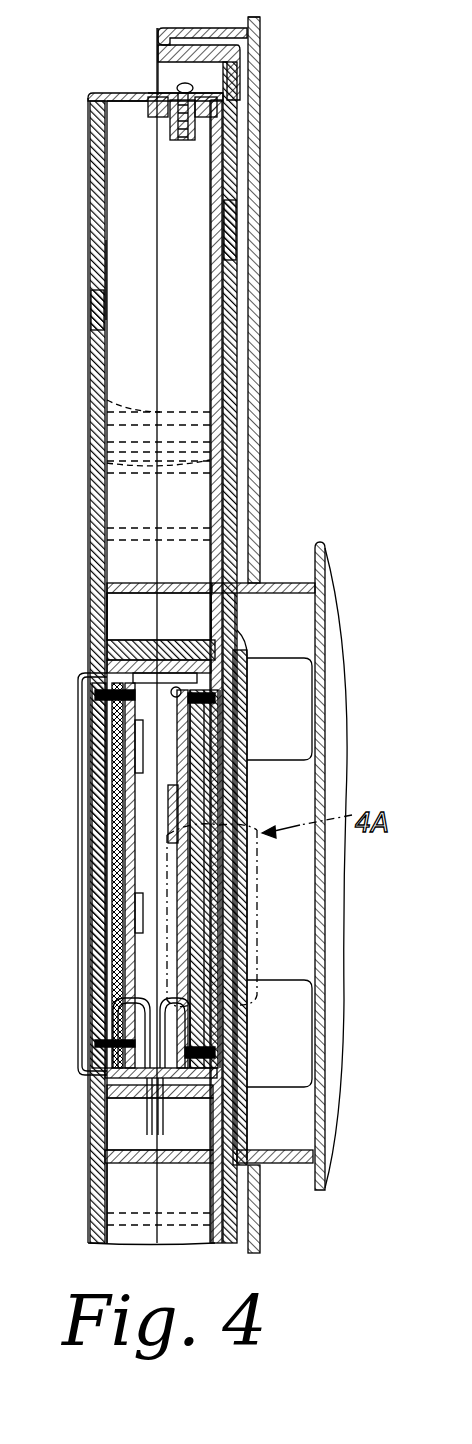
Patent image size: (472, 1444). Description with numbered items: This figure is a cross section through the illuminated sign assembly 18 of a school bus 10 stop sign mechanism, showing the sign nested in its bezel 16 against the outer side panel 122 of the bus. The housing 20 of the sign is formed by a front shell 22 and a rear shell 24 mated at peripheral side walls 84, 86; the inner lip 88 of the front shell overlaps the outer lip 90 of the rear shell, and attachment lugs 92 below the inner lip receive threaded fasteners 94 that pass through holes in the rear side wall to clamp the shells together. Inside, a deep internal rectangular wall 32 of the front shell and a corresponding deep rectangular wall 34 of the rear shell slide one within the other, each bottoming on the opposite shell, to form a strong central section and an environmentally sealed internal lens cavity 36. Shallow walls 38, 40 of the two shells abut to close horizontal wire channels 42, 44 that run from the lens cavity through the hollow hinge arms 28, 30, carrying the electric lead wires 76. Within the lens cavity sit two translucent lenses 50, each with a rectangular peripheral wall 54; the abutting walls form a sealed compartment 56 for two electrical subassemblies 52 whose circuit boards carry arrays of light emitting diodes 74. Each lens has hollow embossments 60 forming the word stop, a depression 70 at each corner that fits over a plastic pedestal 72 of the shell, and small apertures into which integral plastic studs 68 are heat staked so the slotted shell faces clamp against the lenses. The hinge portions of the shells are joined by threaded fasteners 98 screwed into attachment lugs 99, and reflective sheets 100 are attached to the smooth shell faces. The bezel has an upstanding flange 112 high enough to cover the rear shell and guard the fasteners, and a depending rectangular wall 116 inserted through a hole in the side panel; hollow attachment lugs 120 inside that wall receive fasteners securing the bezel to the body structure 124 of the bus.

The school bus 10 is at (266, 195).
The bezel 16 is at (158, 50).
The illuminated sign assembly 18 is at (88, 104).
The housing 20 is at (88, 185).
The front shell 22 is at (100, 275).
The rear shell 24 is at (215, 282).
The hinge arm 28 is at (100, 395).
The hinge arm 30 is at (88, 1240).
The deep internal rectangular wall 32 is at (120, 650).
The deep internal rectangular wall 34 is at (162, 640).
The internal lens cavity 36 is at (120, 668).
The shallow walls 38 is at (140, 590).
The shallow walls 40 is at (195, 592).
The horizontal wire channel 42 is at (120, 605).
The horizontal wire channel 44 is at (110, 1118).
The translucent lens 50 is at (80, 760).
The electrical subassembly 52 is at (180, 790).
The peripheral wall 54 is at (110, 1073).
The sealed compartment 56 is at (130, 865).
The hollow embossments 60 is at (82, 827).
The plastic studs 68 is at (205, 870).
The depression 70 is at (195, 695).
The plastic pedestal 72 is at (205, 690).
The light emitting diodes 74 is at (232, 722).
The electric lead wires 76 is at (147, 1127).
The peripheral side wall 84 is at (150, 107).
The peripheral side wall 86 is at (205, 102).
The inner lip 88 is at (140, 103).
The outer lip 90 is at (152, 95).
The attachment lug 92 is at (183, 140).
The threaded fastener 94 is at (193, 86).
The threaded fastener 98 is at (218, 455).
The attachment lug 99 is at (100, 425).
The reflective sheet 100 is at (225, 232).
The upstanding flange 112 is at (190, 28).
The depending rectangular wall 116 is at (270, 585).
The hollow attachment lug 120 is at (300, 755).
The outer side panel 122 is at (258, 165).
The body structure 124 is at (325, 578).